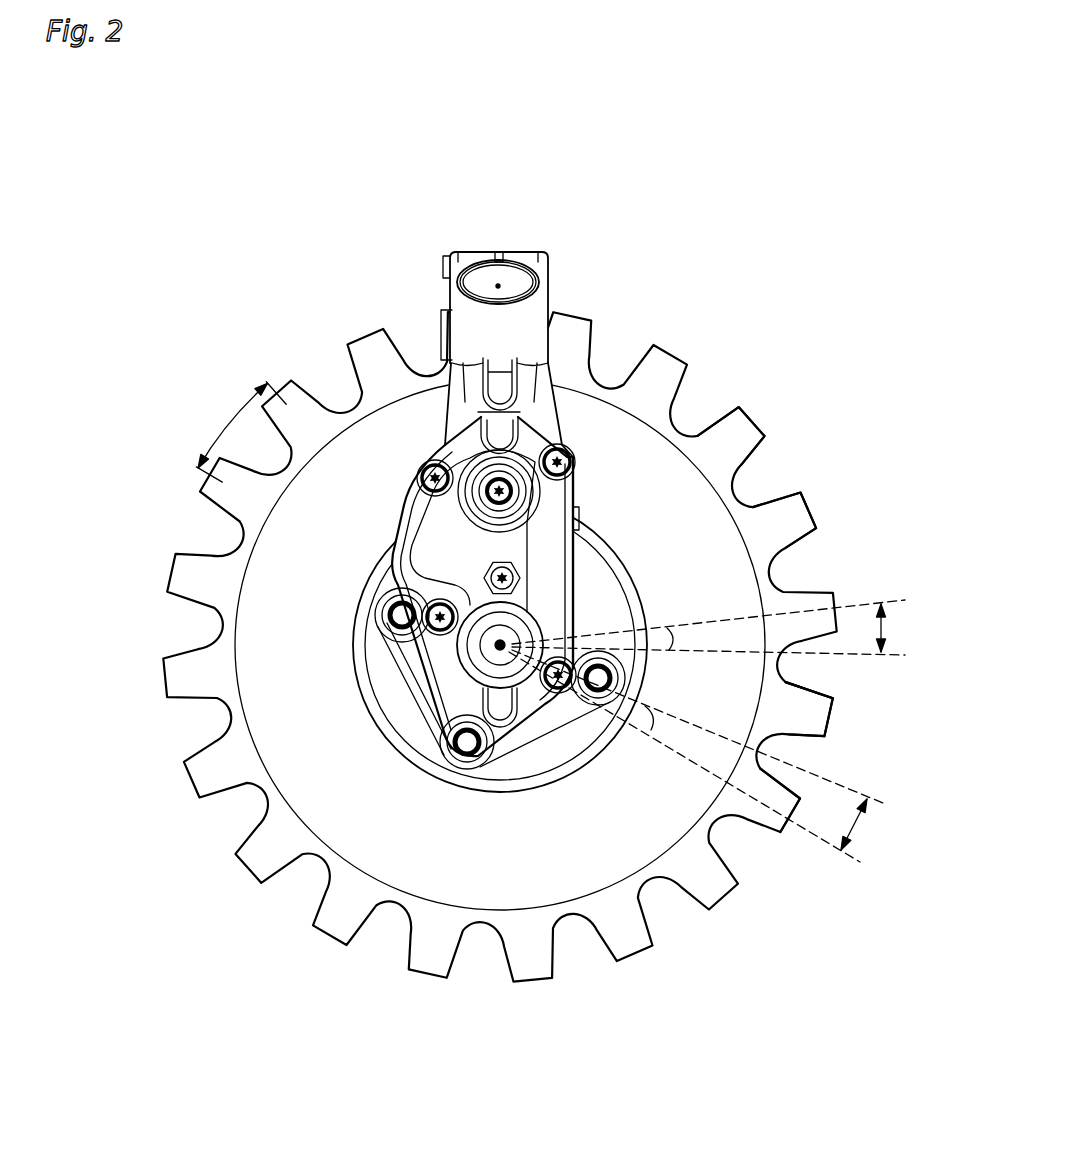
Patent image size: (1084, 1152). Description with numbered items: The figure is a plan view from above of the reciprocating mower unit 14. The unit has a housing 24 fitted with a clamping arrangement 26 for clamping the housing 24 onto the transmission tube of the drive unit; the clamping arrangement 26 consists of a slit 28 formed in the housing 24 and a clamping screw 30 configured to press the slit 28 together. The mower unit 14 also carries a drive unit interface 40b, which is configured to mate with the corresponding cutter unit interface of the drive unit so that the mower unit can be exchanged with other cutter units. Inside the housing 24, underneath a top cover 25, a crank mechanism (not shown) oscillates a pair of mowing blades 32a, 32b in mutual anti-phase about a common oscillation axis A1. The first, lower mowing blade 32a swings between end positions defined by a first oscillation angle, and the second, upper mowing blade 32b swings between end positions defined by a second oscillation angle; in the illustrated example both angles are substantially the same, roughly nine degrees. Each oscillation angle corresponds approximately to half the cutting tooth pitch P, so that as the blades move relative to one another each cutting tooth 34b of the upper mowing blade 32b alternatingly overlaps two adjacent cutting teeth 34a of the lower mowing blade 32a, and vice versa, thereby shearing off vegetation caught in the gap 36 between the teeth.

The reciprocating mower unit 14 is at (744, 181).
The housing 24 is at (456, 431).
The top cover 25 is at (557, 552).
The clamping arrangement 26 is at (466, 240).
The slit 28 is at (499, 250).
The clamping screw 30 is at (443, 266).
The first, lower mowing blade 32a is at (755, 500).
The second, upper mowing blade 32b is at (722, 467).
The cutting teeth of the lower mowing blade 34a is at (828, 696).
The cutting tooth of the upper mowing blade 34b is at (789, 820).
The gap 36 is at (799, 752).
The drive unit interface 40b is at (530, 221).
The cutting tooth pitch P is at (241, 432).
The common oscillation axis A1 is at (497, 648).